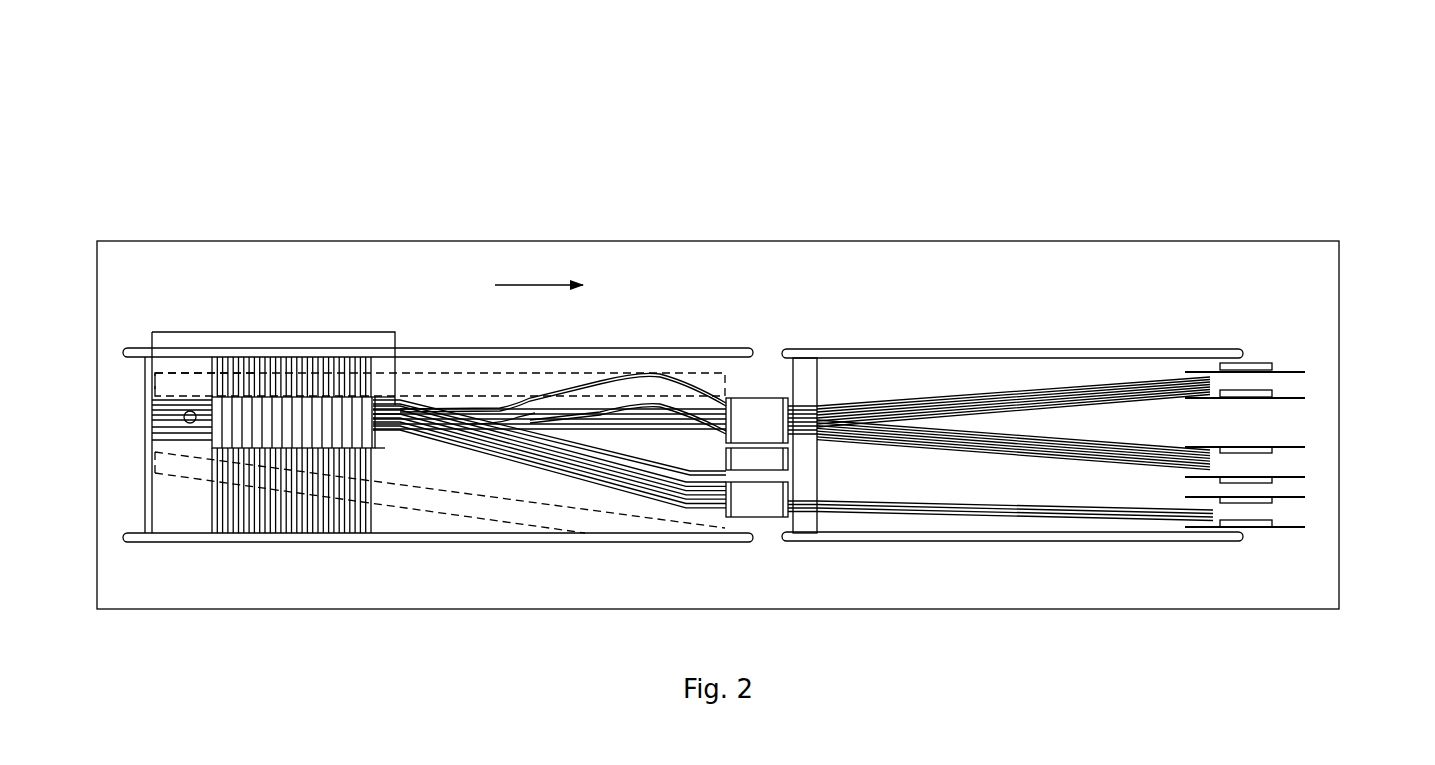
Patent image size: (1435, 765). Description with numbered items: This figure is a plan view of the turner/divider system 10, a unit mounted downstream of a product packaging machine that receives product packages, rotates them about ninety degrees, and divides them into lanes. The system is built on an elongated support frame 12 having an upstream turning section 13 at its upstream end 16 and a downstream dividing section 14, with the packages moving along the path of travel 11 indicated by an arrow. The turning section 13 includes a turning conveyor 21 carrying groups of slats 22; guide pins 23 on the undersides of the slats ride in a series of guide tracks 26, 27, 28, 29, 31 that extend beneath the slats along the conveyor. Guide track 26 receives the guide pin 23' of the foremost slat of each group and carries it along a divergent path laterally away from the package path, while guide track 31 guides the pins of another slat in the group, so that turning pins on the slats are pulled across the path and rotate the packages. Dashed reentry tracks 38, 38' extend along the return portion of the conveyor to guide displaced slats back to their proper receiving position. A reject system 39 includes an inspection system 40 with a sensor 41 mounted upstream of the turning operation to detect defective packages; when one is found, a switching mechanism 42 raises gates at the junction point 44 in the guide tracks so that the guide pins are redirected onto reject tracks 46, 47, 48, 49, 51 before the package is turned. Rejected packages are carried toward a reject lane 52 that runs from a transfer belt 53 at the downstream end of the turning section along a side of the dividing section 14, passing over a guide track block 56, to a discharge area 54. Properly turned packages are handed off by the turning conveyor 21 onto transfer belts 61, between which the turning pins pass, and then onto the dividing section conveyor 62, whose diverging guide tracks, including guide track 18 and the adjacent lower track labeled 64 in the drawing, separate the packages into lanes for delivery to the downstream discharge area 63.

The turner/divider system 10 is at (792, 140).
The path of travel 11 is at (527, 283).
The support frame 12 is at (440, 540).
The turning section 13 is at (632, 328).
The dividing section 14 is at (895, 340).
The upstream end 16 is at (248, 542).
The guide track 18 is at (1028, 392).
The turning conveyor 21 is at (370, 502).
The slats 22 is at (276, 400).
The guide pins 23 is at (293, 361).
The guide pin of foremost slat 23' is at (376, 347).
The guide track 26 is at (585, 385).
The guide track 27 is at (512, 414).
The guide track 28 is at (518, 417).
The guide track 29 is at (622, 420).
The guide track 31 is at (653, 405).
The reentry track 38 is at (444, 322).
The reentry track 38' is at (440, 517).
The reject system 39 is at (163, 392).
The inspection system 40 is at (180, 392).
The sensor 41 is at (183, 419).
The switching mechanism 42 is at (413, 413).
The junction point 44 is at (403, 397).
The reject track 46 is at (627, 485).
The reject track 47 is at (635, 487).
The reject track 48 is at (626, 485).
The reject track 49 is at (610, 485).
The reject track 51 is at (557, 478).
The reject lane 52 is at (1007, 517).
The transfer belt 53 is at (740, 505).
The discharge area 54 is at (1270, 540).
The guide track block 56 is at (910, 512).
The transfer belts 61 is at (743, 405).
The dividing section conveyor 62 is at (818, 395).
The downstream discharge area 63 is at (1297, 422).
The lower fiber bundle 64 is at (857, 428).